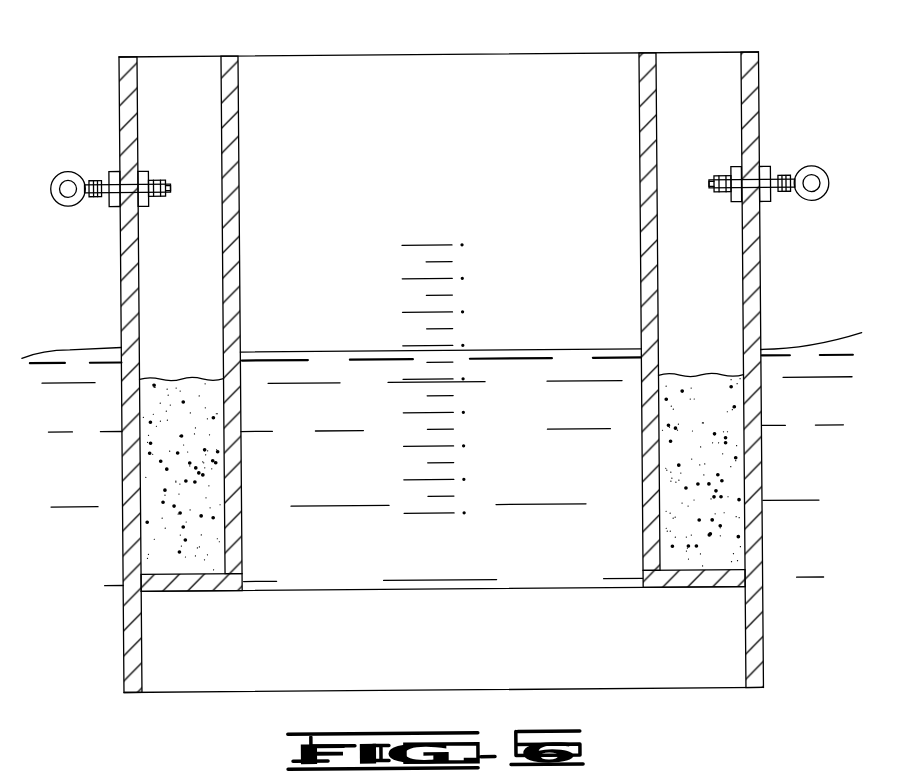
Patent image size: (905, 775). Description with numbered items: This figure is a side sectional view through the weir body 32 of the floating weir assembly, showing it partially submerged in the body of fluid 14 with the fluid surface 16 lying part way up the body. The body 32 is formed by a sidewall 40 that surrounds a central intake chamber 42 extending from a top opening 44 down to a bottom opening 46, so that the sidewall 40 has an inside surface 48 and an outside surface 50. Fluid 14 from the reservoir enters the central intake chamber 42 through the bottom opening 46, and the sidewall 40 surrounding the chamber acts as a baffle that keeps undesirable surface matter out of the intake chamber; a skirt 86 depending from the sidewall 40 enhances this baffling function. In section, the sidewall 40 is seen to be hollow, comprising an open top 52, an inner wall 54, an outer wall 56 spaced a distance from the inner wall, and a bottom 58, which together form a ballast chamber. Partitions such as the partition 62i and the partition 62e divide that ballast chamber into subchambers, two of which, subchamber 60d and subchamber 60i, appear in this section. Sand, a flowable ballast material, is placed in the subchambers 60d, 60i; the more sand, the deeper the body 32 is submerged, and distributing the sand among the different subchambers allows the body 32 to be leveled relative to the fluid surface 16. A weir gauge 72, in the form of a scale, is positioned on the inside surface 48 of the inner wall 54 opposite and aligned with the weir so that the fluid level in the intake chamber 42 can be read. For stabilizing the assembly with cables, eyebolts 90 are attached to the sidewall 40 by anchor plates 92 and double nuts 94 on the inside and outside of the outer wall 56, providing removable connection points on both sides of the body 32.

The body of fluid 14 is at (373, 366).
The fluid surface 16 is at (82, 345).
The weir body 32 is at (762, 280).
The sidewall 40 is at (131, 558).
The central intake chamber 42 is at (452, 166).
The top opening 44 is at (288, 314).
The bottom opening 46 is at (141, 650).
The inside surface 48 is at (288, 314).
The outside surface 50 is at (799, 369).
The open top 52 is at (660, 80).
The inner wall 54 is at (240, 234).
The outer wall 56 is at (84, 375).
The bottom 58 is at (693, 589).
The subchamber 60d is at (192, 348).
The subchamber 60i is at (749, 344).
The partition 62i is at (132, 287).
The partition 62e is at (756, 338).
The weir gauge 72 is at (466, 288).
The skirt 86 is at (693, 652).
The eyebolt 90 is at (67, 165).
The anchor plate 92 is at (145, 169).
The double nuts 94 is at (159, 198).